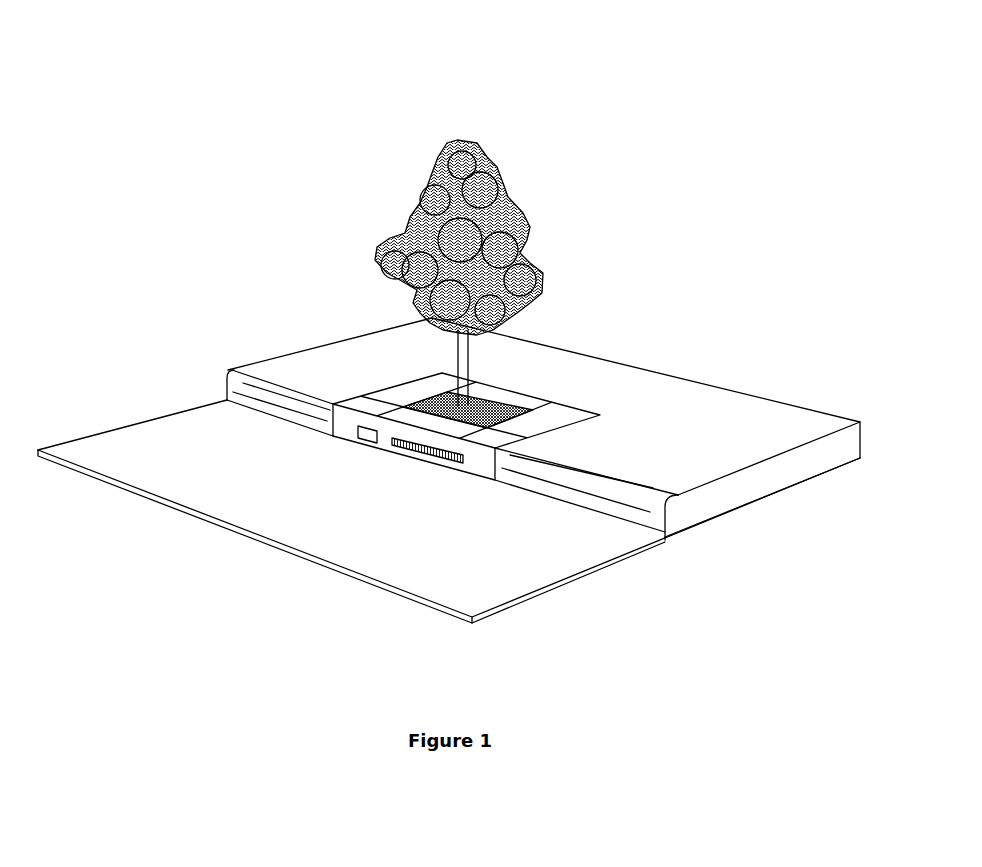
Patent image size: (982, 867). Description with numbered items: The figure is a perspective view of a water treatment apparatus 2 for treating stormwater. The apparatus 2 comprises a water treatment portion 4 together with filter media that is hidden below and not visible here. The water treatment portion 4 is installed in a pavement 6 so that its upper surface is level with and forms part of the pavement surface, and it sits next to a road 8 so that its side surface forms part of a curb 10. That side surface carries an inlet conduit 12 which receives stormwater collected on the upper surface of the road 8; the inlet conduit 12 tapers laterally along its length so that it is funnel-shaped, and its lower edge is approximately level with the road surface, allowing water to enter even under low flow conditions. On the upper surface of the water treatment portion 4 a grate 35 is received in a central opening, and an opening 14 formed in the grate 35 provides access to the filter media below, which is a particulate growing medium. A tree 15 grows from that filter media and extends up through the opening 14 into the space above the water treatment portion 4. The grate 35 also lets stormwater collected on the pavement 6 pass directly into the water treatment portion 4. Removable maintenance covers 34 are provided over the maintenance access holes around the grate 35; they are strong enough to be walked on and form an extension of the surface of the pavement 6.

The water treatment apparatus 2 is at (530, 328).
The water treatment portion 4 is at (600, 431).
The pavement 6 is at (315, 357).
The road 8 is at (90, 433).
The curb 10 is at (225, 372).
The inlet conduit 12 is at (405, 450).
The opening 14 is at (476, 400).
The tree 15 is at (466, 140).
The maintenance cover 34 is at (678, 495).
The grate 35 is at (505, 405).